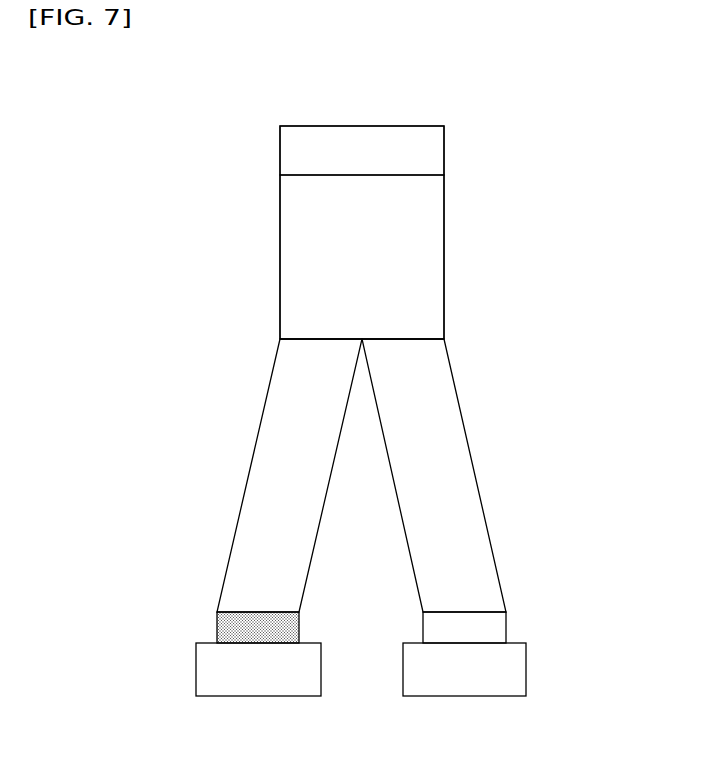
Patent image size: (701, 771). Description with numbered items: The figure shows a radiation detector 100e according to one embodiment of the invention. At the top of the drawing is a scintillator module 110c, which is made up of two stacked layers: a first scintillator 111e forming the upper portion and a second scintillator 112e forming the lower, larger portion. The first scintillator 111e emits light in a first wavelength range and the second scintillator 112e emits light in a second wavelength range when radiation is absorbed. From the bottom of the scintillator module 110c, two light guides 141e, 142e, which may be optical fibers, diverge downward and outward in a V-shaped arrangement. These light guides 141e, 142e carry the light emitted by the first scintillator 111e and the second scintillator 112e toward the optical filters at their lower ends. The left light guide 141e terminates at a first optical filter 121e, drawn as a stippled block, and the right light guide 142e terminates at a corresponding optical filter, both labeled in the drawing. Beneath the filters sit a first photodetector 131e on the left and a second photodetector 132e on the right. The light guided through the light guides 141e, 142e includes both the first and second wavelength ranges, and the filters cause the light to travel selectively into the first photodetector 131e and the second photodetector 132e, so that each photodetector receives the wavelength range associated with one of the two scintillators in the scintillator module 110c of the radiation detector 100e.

The radiation detector 100e is at (552, 93).
The scintillator module 110c is at (539, 148).
The first scintillator 111e is at (427, 149).
The second scintillator 112e is at (427, 261).
The first optical filter 121e is at (223, 628).
The first photodetector 131e is at (262, 679).
The second photodetector 132e is at (473, 687).
The light guide 141e is at (270, 463).
The light guide 142e is at (462, 468).